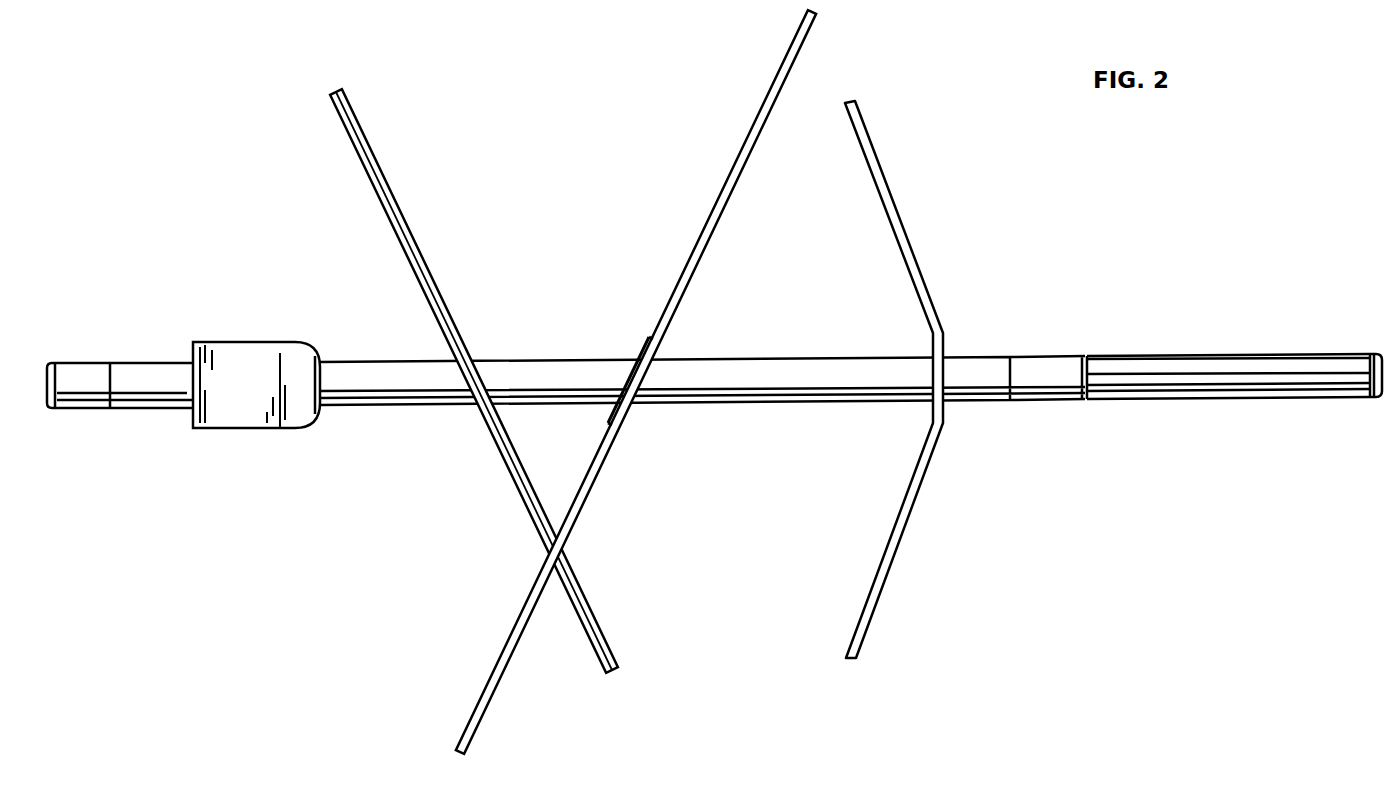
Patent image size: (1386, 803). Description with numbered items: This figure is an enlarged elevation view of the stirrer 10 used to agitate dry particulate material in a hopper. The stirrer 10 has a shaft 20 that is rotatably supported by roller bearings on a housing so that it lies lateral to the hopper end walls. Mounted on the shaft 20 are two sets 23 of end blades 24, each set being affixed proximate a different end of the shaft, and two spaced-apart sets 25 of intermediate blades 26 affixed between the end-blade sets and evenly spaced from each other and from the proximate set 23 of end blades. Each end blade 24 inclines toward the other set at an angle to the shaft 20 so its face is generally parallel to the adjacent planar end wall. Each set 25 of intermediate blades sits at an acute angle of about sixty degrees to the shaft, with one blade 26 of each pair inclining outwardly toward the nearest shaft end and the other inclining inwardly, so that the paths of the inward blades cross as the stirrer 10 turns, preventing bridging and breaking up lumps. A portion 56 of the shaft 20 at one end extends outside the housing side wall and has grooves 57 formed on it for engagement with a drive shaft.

The stirrer 10 is at (476, 556).
The shaft 20 is at (800, 370).
The set of end blades 23 is at (929, 301).
The end blade 24 is at (890, 196).
The set of intermediate blades 25 is at (457, 327).
The intermediate blade 26 is at (384, 177).
The portion of the shaft 56 is at (1170, 357).
The grooves 57 is at (1263, 378).